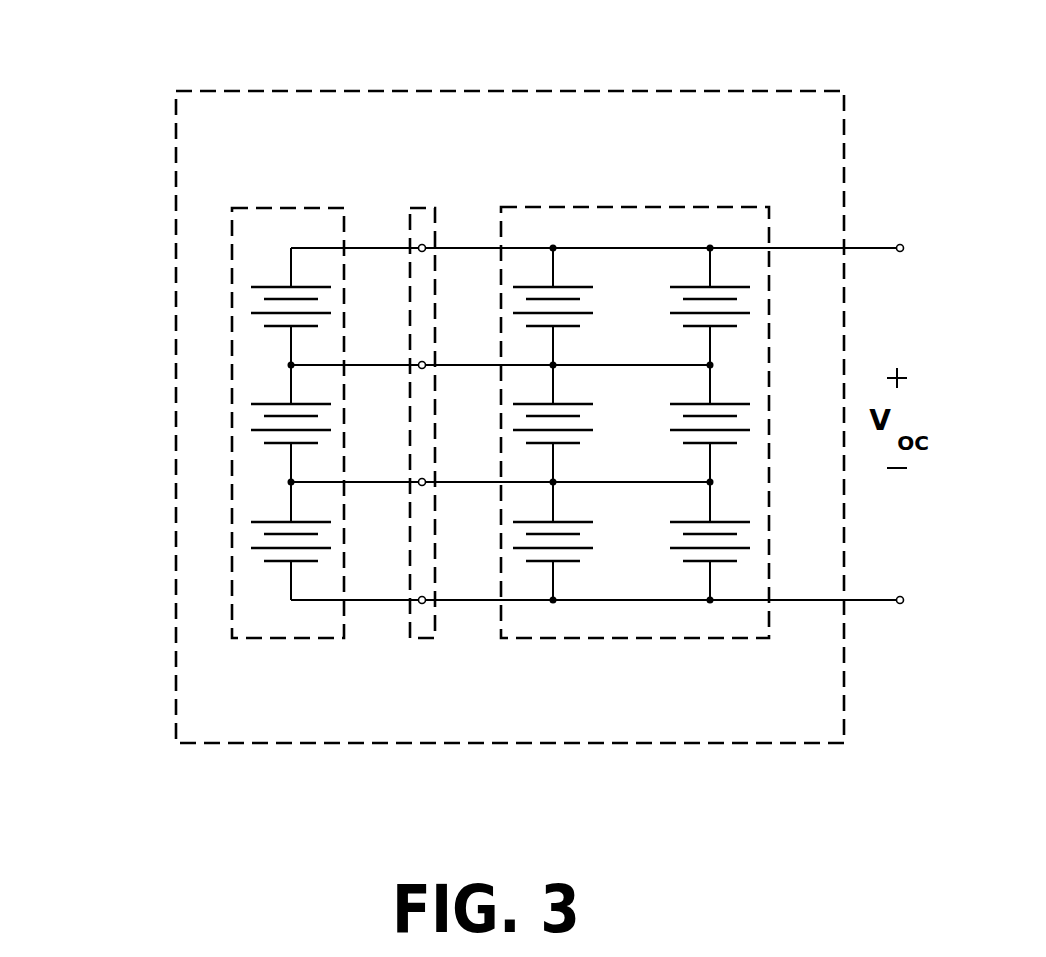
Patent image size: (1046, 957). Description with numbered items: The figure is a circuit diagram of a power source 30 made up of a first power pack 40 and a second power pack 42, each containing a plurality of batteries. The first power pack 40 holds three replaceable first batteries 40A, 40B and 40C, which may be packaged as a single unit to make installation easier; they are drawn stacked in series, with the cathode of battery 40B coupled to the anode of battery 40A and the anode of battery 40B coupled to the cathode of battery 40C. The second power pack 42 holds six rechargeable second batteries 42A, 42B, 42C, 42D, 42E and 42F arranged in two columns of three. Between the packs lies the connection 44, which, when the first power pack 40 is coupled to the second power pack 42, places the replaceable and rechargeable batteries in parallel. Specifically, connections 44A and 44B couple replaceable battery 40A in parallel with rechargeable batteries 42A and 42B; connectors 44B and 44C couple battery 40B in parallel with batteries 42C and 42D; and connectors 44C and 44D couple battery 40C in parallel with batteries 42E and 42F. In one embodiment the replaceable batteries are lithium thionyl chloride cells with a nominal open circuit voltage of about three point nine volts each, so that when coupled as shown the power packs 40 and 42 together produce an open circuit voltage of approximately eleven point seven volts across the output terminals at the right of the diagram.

The power source 30 is at (398, 89).
The first power pack 40 is at (288, 207).
The replaceable first battery 40A is at (210, 313).
The replaceable first battery 40B is at (200, 432).
The replaceable first battery 40C is at (200, 548).
The second power pack 42 is at (525, 207).
The rechargeable second battery 42A is at (532, 272).
The rechargeable second battery 42B is at (745, 278).
The rechargeable second battery 42C is at (588, 387).
The rechargeable second battery 42D is at (690, 390).
The rechargeable second battery 42E is at (567, 570).
The rechargeable second battery 42F is at (738, 572).
The connection 44 is at (420, 640).
The connection 44A is at (425, 233).
The connection 44B is at (422, 350).
The connector 44C is at (422, 497).
The connector 44D is at (418, 613).